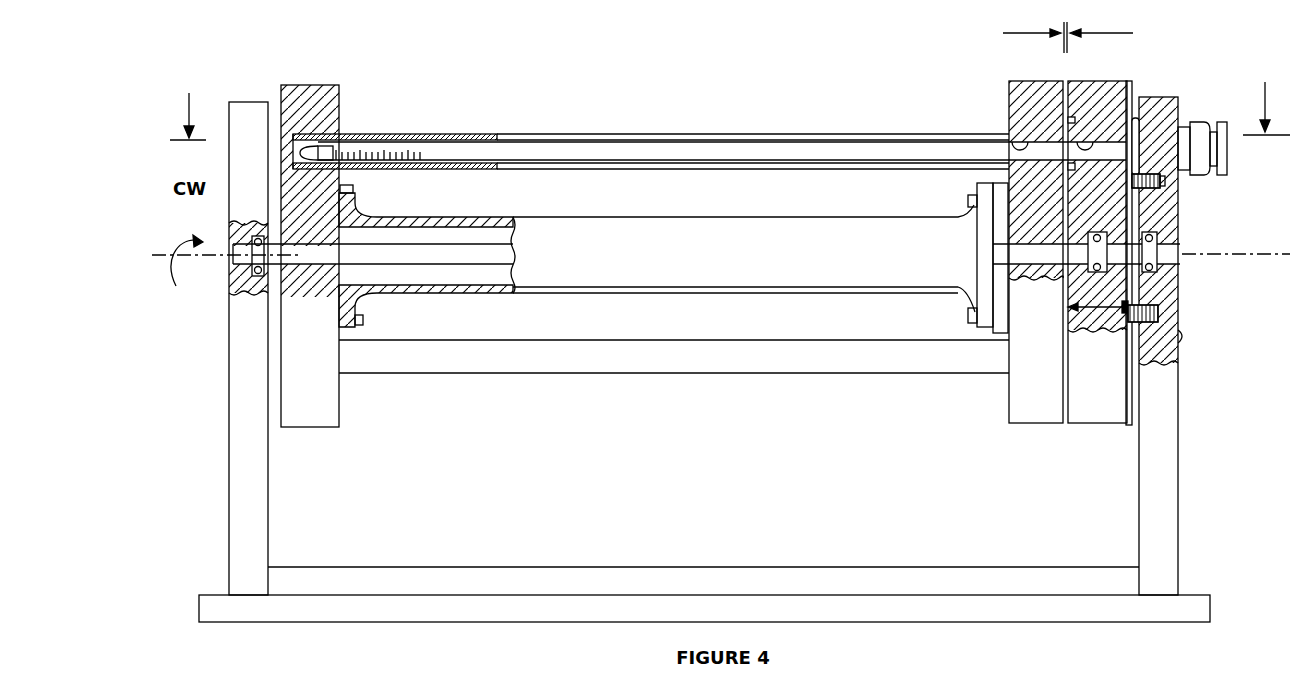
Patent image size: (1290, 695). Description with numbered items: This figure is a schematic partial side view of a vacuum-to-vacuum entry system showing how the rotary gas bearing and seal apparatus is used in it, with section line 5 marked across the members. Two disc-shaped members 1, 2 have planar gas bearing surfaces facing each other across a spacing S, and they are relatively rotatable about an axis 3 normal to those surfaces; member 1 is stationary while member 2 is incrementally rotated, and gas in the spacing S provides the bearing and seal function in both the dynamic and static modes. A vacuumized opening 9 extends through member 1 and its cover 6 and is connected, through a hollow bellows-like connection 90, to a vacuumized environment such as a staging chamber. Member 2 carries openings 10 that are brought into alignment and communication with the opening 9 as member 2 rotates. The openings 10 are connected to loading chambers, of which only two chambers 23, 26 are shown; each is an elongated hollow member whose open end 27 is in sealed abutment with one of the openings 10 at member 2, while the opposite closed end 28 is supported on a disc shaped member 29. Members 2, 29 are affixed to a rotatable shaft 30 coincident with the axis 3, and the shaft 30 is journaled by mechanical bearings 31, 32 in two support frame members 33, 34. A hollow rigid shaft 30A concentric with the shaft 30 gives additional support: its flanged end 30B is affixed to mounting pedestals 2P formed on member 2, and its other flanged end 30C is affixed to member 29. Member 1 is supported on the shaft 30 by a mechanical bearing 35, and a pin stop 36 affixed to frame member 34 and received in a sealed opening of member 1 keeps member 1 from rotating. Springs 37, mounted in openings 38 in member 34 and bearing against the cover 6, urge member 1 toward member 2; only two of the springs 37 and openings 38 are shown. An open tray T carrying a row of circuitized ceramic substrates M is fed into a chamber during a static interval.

The member 1 is at (1098, 407).
The member 2 is at (1021, 398).
The mounting pedestals 2P is at (1000, 190).
The axis 3 is at (148, 262).
The section line 5- 5 is at (730, 124).
The cover 6 is at (1141, 426).
The vacuumized opening 9 is at (1108, 135).
The openings 10 is at (1061, 140).
The chamber 23 is at (671, 134).
The chamber 26 is at (676, 356).
The end of chamber 27 is at (1023, 140).
The closed ends 28 is at (352, 136).
The disc shaped member 29 is at (323, 378).
The rotatable shaft 30 is at (481, 252).
The hollow rigid shaft 30A is at (669, 240).
The flanged end 30B is at (976, 191).
The flanged end 30C is at (347, 207).
The mechanical bearing 31 is at (234, 278).
The mechanical bearing 32 is at (1185, 247).
The support frame member 33 is at (236, 532).
The support frame member 34 is at (1170, 447).
The mechanical bearing 35 is at (1069, 309).
The pin stop 36 is at (1134, 108).
The springs 37 is at (1163, 182).
The openings 38 is at (1170, 184).
The hollow bellows-like connection 90 is at (1203, 124).
The circuitized ceramic substrates M is at (372, 150).
The spacing S is at (1072, 13).
The tray T is at (482, 154).